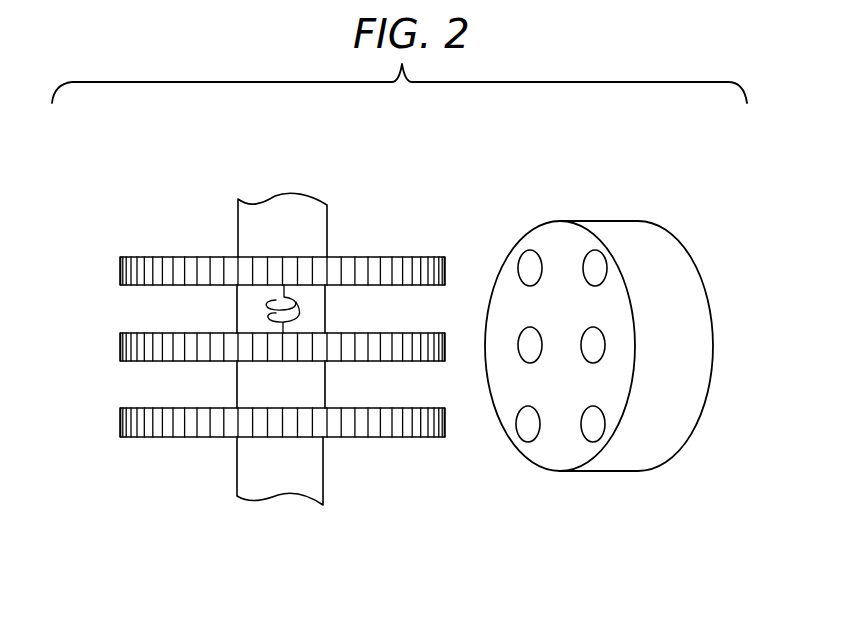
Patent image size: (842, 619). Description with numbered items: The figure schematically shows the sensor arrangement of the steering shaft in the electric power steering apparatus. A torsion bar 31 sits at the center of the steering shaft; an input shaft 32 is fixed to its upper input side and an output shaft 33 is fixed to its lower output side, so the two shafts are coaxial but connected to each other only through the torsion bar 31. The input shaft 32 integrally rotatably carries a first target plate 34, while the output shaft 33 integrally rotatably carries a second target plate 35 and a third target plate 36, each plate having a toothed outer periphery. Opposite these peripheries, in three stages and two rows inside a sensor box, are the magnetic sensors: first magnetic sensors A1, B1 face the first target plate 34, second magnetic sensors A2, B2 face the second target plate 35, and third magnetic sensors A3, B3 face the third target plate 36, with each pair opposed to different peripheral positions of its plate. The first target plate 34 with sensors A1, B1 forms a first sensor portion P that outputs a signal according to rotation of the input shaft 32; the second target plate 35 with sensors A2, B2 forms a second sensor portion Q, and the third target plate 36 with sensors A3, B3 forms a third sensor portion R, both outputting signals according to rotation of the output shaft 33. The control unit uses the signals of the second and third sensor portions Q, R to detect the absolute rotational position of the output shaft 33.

The torsion bar 31 is at (297, 310).
The input shaft 32 is at (265, 215).
The output shaft 33 is at (273, 484).
The first target plate 34 is at (181, 257).
The second target plate 35 is at (165, 333).
The third target plate 36 is at (180, 437).
The first magnetic sensor A1 is at (594, 265).
The second magnetic sensor A2 is at (590, 342).
The third magnetic sensor A3 is at (594, 429).
The first magnetic sensor B1 is at (526, 263).
The second magnetic sensor B2 is at (526, 350).
The third magnetic sensor B3 is at (524, 432).
The first sensor portion P is at (493, 248).
The second sensor portion Q is at (463, 327).
The third sensor portion R is at (467, 436).